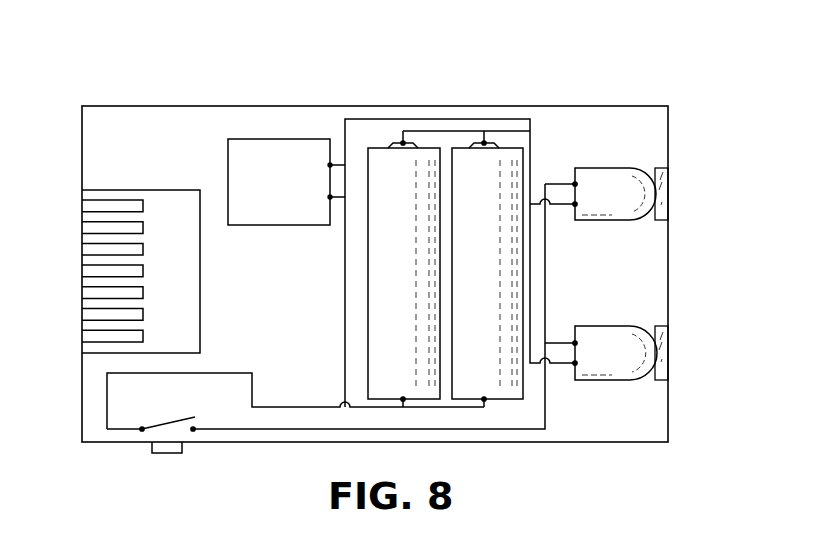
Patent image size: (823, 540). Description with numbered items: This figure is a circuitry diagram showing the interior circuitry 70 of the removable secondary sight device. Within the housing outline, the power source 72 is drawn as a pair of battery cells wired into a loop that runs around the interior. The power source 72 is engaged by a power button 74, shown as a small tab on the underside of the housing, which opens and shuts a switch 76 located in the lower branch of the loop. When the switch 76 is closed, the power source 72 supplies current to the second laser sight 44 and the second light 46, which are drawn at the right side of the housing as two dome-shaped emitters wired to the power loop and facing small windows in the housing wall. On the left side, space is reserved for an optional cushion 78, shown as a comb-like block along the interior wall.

The interior circuitry 70 is at (153, 65).
The power source 72 is at (512, 165).
The power button 74 is at (163, 455).
The switch 76 is at (178, 428).
The cushion 78 is at (82, 215).
The second laser sight 44 is at (633, 372).
The second light 46 is at (615, 179).